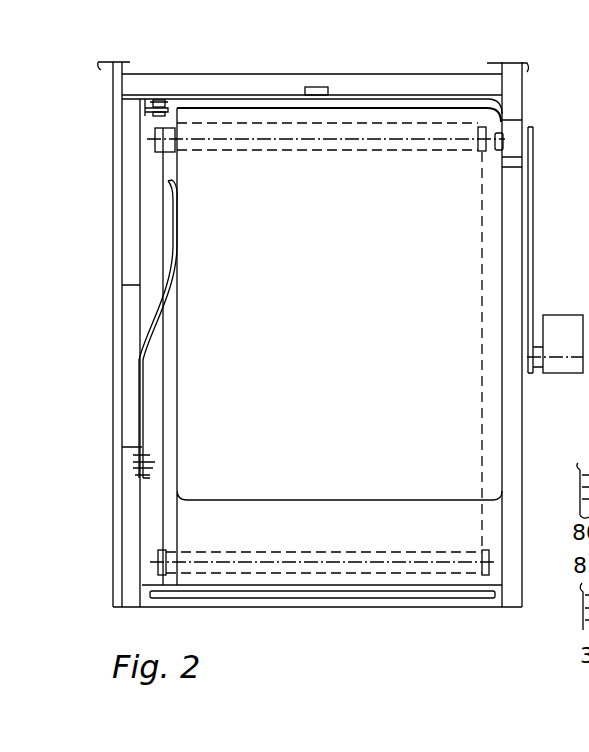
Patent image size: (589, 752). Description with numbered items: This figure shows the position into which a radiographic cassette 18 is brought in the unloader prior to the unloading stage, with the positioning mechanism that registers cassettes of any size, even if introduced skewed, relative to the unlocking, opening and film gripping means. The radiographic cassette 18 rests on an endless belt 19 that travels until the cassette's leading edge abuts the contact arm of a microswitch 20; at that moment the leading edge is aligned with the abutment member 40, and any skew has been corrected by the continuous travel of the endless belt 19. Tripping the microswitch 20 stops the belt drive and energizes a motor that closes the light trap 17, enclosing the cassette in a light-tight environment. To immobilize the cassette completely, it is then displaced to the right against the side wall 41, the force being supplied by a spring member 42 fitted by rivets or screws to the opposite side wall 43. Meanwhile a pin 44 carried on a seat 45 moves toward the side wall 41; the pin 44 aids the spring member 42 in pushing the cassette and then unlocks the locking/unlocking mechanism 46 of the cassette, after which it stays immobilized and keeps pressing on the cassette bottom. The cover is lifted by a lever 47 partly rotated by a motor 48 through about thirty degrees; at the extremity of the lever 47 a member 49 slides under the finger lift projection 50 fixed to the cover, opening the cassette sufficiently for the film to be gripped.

The light trap 17 is at (327, 593).
The radiographic cassette 18 is at (198, 403).
The endless belt 19 is at (188, 530).
The microswitch 20 is at (318, 89).
The abutment member 40 is at (408, 83).
The side wall 41 is at (513, 453).
The spring member 42 is at (172, 207).
The side wall 43 is at (132, 507).
The pin 44 is at (166, 107).
The seat 45 is at (157, 101).
The locking/unlocking mechanism 46 is at (198, 104).
The lever 47 is at (535, 203).
The motor 48 is at (555, 323).
The member 49 is at (518, 147).
The finger lift projection 50 is at (503, 136).